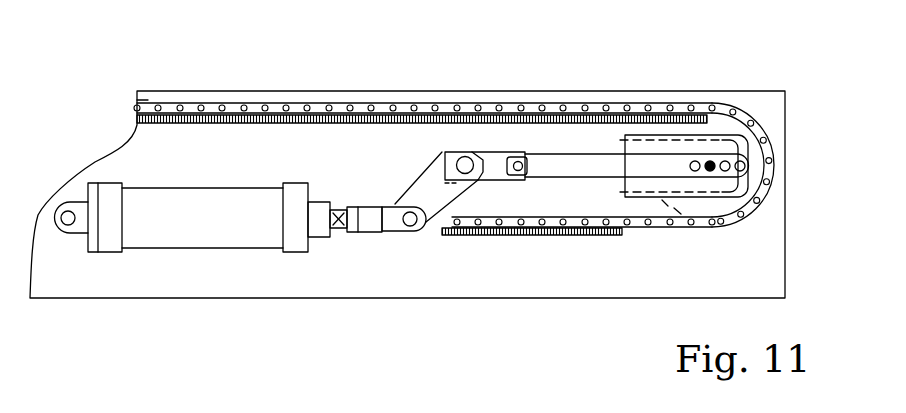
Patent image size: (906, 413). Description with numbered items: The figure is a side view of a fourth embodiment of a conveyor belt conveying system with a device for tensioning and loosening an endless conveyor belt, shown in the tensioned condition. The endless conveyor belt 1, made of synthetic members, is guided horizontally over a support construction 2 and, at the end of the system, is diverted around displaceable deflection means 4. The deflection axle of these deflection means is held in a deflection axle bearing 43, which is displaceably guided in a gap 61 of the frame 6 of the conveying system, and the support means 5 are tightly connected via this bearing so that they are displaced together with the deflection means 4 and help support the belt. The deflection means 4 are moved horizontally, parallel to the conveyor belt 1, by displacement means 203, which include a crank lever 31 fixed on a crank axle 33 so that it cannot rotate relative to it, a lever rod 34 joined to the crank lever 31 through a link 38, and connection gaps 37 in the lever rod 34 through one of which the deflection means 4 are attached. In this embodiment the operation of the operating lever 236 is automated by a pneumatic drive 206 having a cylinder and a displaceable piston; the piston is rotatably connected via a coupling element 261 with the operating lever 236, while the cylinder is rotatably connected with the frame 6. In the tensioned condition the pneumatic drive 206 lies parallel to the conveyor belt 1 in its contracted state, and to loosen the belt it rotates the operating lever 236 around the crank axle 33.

The endless conveyor belt 1 is at (187, 107).
The support construction 2 is at (137, 118).
The displaceable deflection means 4 is at (662, 134).
The support means 5 is at (661, 128).
The frame 6 is at (138, 277).
The crank lever 31 is at (490, 157).
The crank axle 33 is at (463, 163).
The lever rod 34 is at (583, 163).
The connection gaps 37 is at (728, 140).
The link 38 is at (520, 157).
The deflection axle bearing 43 is at (717, 187).
The gap 61 is at (603, 186).
The displacement means 203 is at (533, 209).
The pneumatic drive 206 is at (238, 270).
The operating lever 236 is at (432, 157).
The coupling element 261 is at (372, 220).